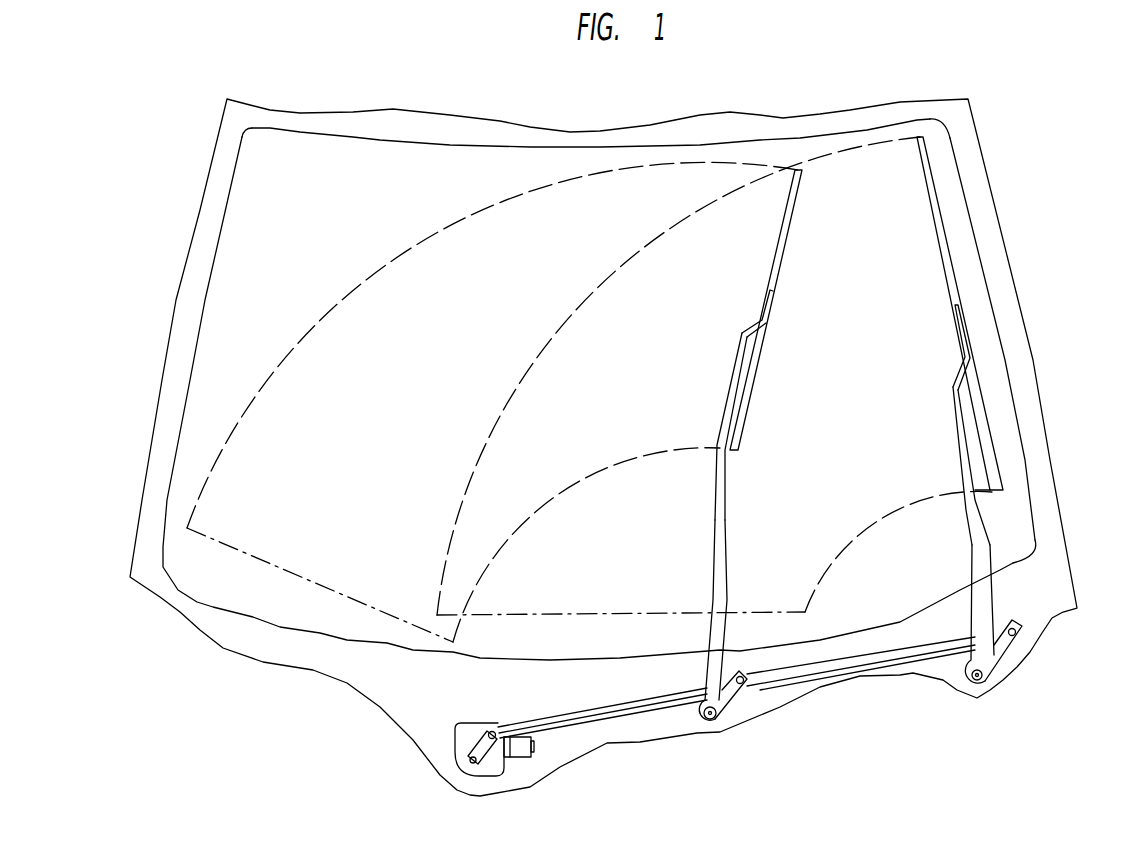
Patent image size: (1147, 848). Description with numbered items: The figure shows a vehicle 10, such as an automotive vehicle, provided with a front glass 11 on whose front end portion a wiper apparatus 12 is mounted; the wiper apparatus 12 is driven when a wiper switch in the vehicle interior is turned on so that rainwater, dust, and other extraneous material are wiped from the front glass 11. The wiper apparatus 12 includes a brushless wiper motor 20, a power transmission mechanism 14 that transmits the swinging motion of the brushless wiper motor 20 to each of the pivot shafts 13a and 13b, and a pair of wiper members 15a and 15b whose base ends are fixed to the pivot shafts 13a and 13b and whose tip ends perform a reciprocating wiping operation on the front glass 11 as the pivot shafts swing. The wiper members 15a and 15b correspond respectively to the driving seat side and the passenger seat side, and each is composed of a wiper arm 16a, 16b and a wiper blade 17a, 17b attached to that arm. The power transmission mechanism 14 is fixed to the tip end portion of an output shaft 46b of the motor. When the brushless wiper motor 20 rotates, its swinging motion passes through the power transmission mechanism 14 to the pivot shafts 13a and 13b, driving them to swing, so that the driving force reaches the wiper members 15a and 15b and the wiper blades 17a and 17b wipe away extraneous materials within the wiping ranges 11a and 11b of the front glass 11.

The vehicle 10 is at (197, 135).
The front glass 11 is at (255, 268).
The wiping range 11a is at (827, 160).
The wiping range 11b is at (322, 320).
The wiper apparatus 12 is at (822, 685).
The pivot shaft 13a is at (988, 680).
The pivot shaft 13b is at (713, 720).
The power transmission mechanism 14 is at (593, 718).
The wiper member 15a is at (985, 545).
The wiper member 15b is at (728, 517).
The wiper arm 16a is at (984, 573).
The wiper arm 16b is at (718, 577).
The wiper blade 17a is at (943, 235).
The wiper blade 17b is at (750, 380).
The brushless wiper motor 20 is at (455, 752).
The output shaft 46b is at (482, 760).